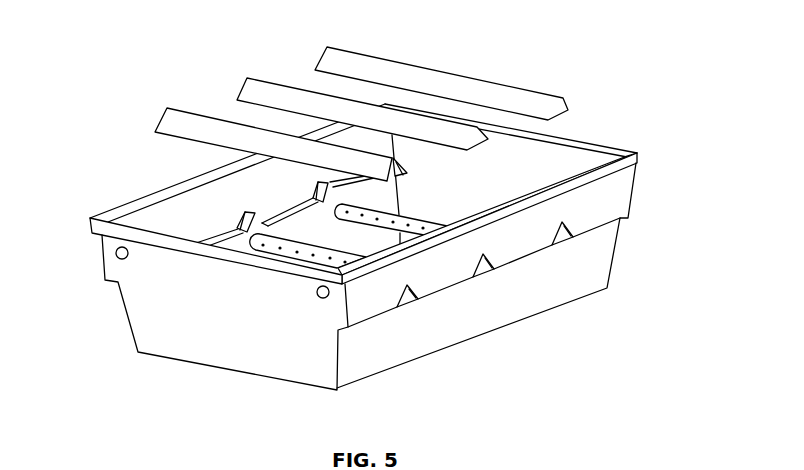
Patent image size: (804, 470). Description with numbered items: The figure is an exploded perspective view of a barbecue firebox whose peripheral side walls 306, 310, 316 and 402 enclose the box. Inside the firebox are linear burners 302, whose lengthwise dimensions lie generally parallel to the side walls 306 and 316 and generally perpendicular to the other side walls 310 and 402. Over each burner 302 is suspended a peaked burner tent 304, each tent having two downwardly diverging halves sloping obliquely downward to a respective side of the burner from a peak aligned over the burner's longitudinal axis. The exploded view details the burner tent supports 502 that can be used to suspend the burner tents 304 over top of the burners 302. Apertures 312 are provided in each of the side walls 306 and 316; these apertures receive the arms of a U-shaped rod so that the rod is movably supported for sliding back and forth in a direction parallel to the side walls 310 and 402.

The burner 302 is at (427, 220).
The burner tent 304 is at (227, 132).
The side wall 306 is at (214, 329).
The side wall 310 is at (186, 219).
The aperture 312 is at (116, 256).
The side wall 316 is at (493, 179).
The side wall 402 is at (503, 246).
The burner tent support 502 is at (240, 213).